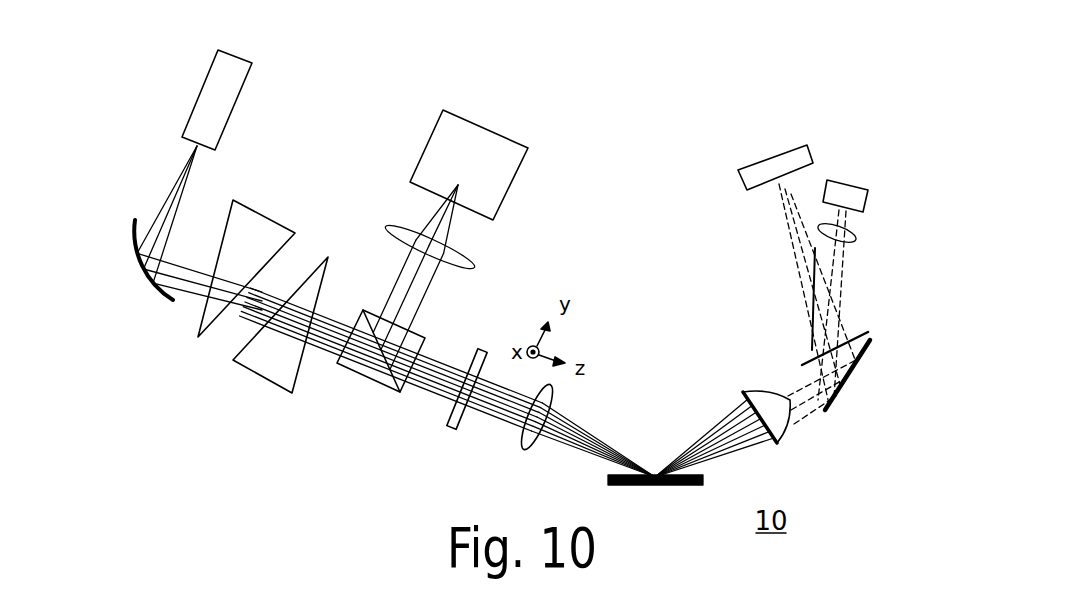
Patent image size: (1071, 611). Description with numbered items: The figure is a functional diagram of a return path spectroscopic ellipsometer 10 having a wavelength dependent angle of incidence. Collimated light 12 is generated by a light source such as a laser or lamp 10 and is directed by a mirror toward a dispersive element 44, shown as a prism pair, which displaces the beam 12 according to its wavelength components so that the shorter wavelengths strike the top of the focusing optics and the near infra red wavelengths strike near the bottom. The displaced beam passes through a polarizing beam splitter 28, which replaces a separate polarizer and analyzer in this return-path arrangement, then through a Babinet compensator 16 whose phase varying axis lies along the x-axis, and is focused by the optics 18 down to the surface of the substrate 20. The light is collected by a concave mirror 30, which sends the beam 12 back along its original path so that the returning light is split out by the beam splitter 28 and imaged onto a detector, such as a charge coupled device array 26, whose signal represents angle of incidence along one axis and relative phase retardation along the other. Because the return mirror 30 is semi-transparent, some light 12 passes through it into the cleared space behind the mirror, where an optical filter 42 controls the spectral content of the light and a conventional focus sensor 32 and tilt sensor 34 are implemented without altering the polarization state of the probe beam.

The light source / ellipsometer 10 is at (200, 95).
The dispersive element 44 is at (187, 343).
The collimated light 12 is at (287, 410).
The polarizing beam splitter 28 is at (368, 382).
The charge coupled device array 26 is at (508, 197).
The Babinet compensator 16 is at (452, 423).
The optics 18 is at (517, 433).
The substrate 20 is at (688, 484).
The concave mirror 30 is at (787, 427).
The optical filter 42 is at (855, 335).
The focus sensor 32 is at (812, 155).
The tilt sensor 34 is at (868, 197).